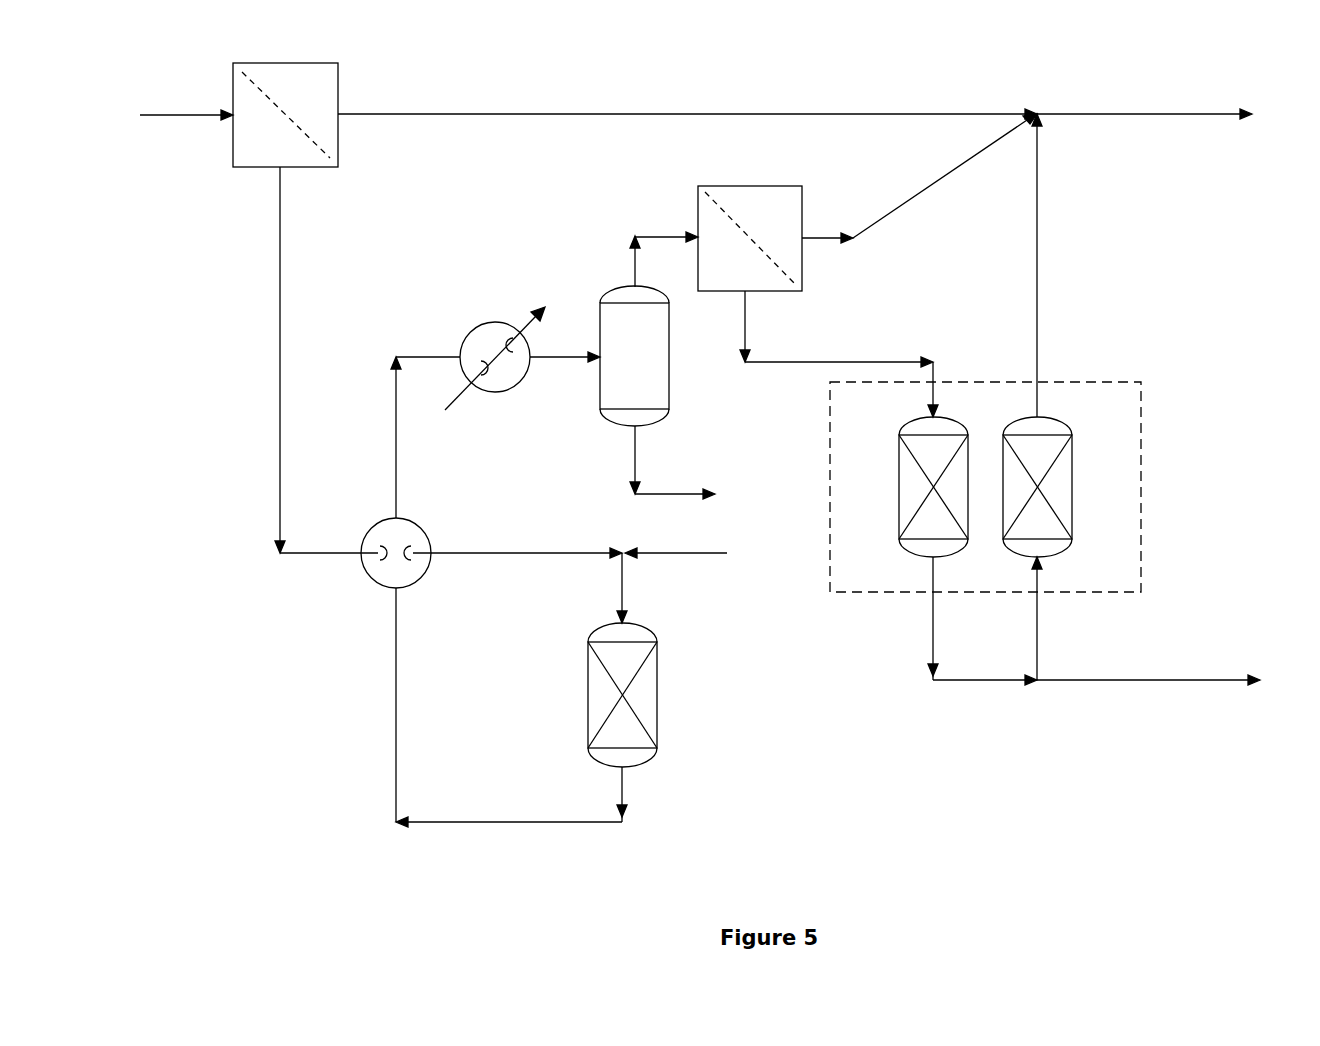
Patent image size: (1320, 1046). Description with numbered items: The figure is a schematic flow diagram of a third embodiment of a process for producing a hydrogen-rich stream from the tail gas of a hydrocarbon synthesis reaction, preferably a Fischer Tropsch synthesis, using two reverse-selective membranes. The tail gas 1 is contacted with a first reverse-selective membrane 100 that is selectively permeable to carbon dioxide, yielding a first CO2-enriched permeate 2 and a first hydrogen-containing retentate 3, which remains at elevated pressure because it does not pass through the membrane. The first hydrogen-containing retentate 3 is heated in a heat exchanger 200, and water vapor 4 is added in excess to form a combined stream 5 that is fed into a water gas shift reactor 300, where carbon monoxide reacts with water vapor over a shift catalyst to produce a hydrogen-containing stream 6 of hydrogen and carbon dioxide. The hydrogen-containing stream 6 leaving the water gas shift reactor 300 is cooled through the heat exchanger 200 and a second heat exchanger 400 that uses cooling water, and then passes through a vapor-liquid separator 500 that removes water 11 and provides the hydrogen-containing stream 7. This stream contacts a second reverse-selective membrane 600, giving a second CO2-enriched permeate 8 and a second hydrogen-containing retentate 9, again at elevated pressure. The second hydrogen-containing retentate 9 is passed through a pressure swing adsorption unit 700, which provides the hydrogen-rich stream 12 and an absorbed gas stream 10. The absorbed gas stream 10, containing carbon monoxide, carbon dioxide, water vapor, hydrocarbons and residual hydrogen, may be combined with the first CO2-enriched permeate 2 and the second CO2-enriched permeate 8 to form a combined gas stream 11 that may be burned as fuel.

The tail gas 1 is at (186, 103).
The first CO2-enriched permeate 2 is at (687, 103).
The first hydrogen-containing retentate 3 is at (326, 360).
The water vapor 4 is at (570, 542).
The combined stream 5 is at (613, 588).
The hydrogen-containing stream 6 is at (509, 592).
The hydrogen-containing stream 7 is at (664, 248).
The second CO2-enriched permeate 8 is at (919, 178).
The second hydrogen-containing retentate 9 is at (839, 354).
The absorbed gas stream 10 is at (1023, 265).
The water / combined gas stream 11 is at (941, 293).
The hydrogen-rich stream 12 is at (1094, 621).
The first reverse-selective membrane 100 is at (312, 133).
The heat exchanger 200 is at (414, 564).
The water gas shift reactor 300 is at (650, 705).
The heat exchanger 400 is at (522, 359).
The vapor-liquid separator 500 is at (662, 363).
The second reverse-selective membrane 600 is at (777, 253).
The pressure swing adsorption unit 700 is at (1013, 506).